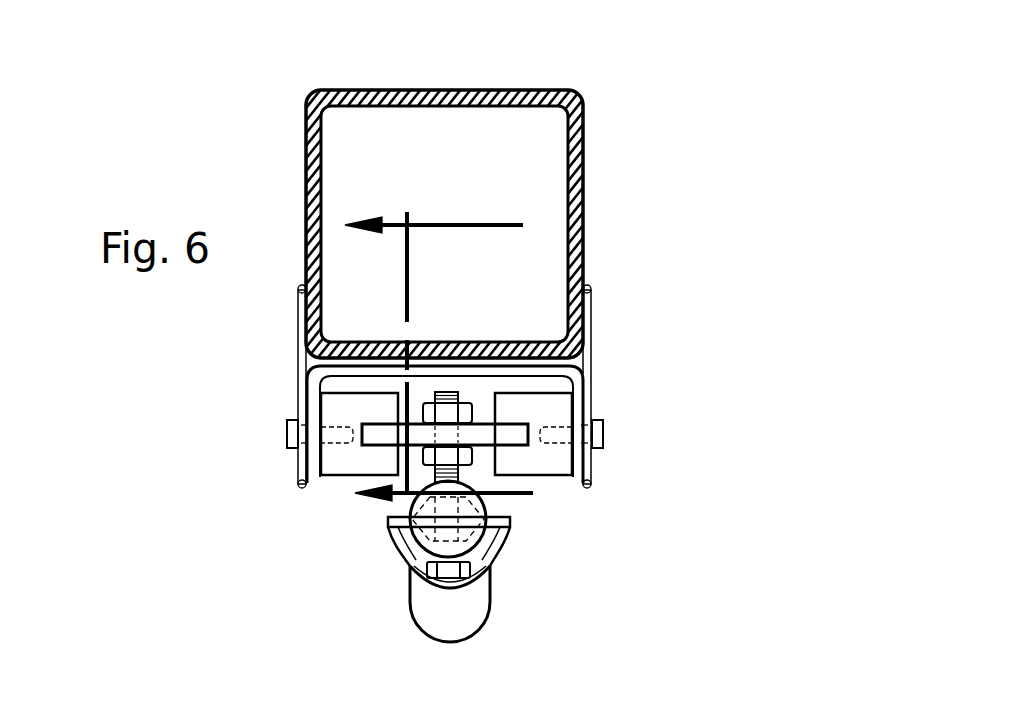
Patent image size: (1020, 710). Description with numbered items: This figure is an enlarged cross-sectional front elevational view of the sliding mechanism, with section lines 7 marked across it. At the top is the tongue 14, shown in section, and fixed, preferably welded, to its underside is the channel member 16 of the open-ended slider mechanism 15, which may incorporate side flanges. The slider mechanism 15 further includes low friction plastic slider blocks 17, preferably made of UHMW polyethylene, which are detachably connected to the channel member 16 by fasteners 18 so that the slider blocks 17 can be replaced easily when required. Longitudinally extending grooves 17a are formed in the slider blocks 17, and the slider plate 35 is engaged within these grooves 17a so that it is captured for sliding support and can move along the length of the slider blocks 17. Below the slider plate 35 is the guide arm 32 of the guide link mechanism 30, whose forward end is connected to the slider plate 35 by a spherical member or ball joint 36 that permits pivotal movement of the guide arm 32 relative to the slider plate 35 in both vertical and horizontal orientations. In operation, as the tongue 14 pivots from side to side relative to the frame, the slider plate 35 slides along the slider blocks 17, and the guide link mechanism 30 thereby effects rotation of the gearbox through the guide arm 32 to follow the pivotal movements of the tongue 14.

The tongue 14 is at (585, 153).
The slider mechanism 15 is at (627, 313).
The channel member 16 is at (300, 337).
The slider blocks 17 is at (340, 484).
The grooves 17a is at (362, 427).
The fasteners 18 is at (287, 433).
The slider plate 35 is at (493, 433).
The ball joint 36 is at (493, 503).
The guide link mechanism 30 is at (365, 588).
The guide arm 32 is at (482, 598).
The section line 7- 7 is at (449, 359).